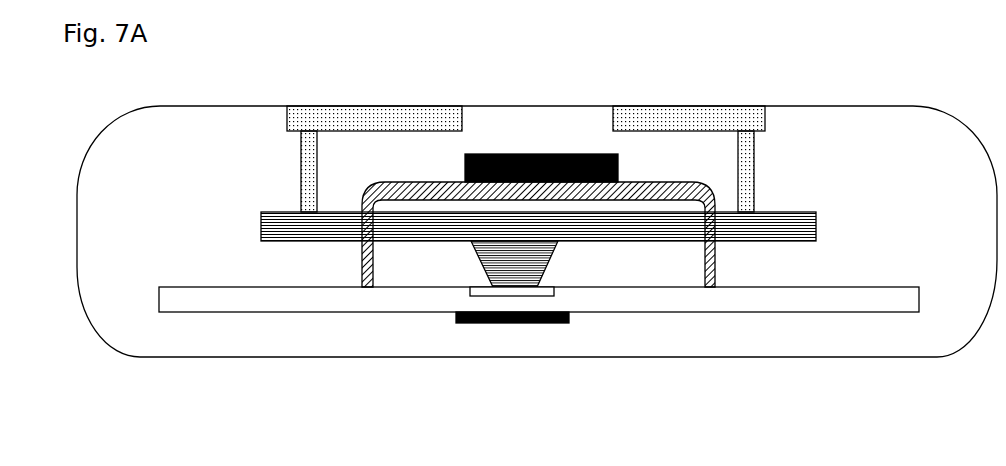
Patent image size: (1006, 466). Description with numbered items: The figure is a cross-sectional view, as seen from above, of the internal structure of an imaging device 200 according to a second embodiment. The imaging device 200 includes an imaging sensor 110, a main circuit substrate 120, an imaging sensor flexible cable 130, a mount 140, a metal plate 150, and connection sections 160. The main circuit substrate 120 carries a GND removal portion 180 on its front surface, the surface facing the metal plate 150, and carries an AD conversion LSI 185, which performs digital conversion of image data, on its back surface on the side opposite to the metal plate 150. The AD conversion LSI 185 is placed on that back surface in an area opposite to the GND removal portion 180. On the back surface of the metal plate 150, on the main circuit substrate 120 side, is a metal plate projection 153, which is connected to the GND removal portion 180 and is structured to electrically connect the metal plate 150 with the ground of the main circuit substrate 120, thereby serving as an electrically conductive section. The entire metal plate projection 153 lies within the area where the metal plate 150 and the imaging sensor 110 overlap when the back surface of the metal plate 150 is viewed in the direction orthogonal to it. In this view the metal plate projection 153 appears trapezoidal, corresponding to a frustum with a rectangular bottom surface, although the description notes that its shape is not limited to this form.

The imaging device 200 is at (359, 85).
The imaging sensor 110 is at (530, 152).
The main circuit substrate 120 is at (871, 306).
The imaging sensor flexible cable 130 is at (706, 272).
The mount 140 is at (748, 117).
The metal plate 150 is at (325, 234).
The metal plate projection 153 is at (482, 276).
The connection sections 160 is at (303, 170).
The GND removal portion 180 is at (467, 289).
The AD conversion LSI 185 is at (564, 323).